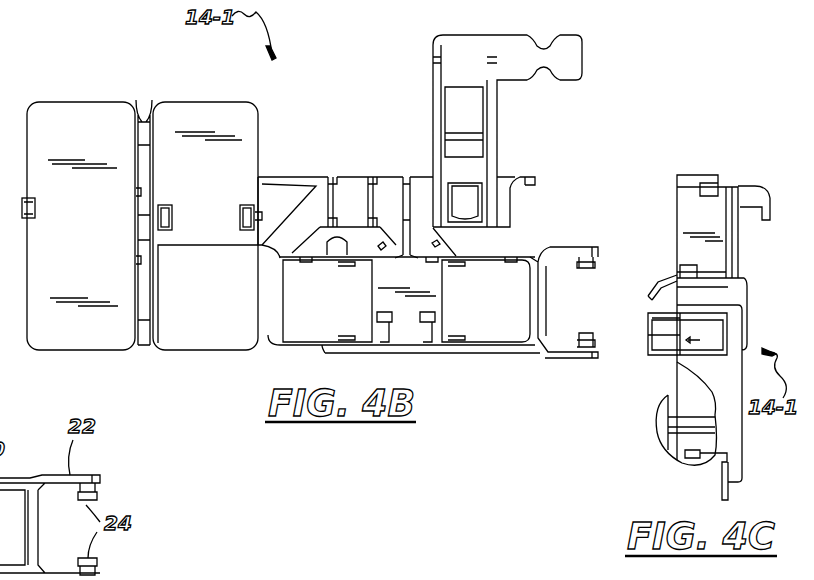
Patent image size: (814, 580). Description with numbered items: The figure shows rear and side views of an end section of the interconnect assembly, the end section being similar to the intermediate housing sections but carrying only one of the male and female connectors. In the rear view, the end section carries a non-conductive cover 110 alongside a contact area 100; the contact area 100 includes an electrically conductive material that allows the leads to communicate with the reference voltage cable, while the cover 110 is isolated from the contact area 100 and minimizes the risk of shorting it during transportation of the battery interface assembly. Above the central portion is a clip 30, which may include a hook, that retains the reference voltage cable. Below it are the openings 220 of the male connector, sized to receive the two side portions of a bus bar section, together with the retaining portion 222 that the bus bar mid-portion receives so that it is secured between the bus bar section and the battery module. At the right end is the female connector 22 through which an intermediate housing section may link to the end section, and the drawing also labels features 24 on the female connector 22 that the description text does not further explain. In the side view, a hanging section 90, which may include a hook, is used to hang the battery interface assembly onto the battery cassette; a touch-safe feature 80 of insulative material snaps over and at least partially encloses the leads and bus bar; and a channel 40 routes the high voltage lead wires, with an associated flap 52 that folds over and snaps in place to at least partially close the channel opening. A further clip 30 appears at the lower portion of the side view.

In FIG. 4B, the non-conductive cover 110 is at (80, 112).
In FIG. 4B, the contact area 100 is at (212, 233).
In FIG. 4B, the clip 30 is at (456, 113).
In FIG. 4C, the clip 30 is at (660, 433).
In FIG. 4B, the opening 220 is at (298, 333).
In FIG. 4B, the retaining portion 222 is at (407, 300).
In FIG. 4B, the female connector 22 is at (563, 251).
In FIG. 4C, the female connector 22 is at (680, 215).
In FIG. 4B, the mounting pin 24 is at (585, 270).
In FIG. 4C, the hanging section 90 is at (748, 186).
In FIG. 4C, the touch-safe feature 80 is at (646, 290).
In FIG. 4C, the flap 52 is at (662, 326).
In FIG. 4C, the channel 40 is at (688, 340).